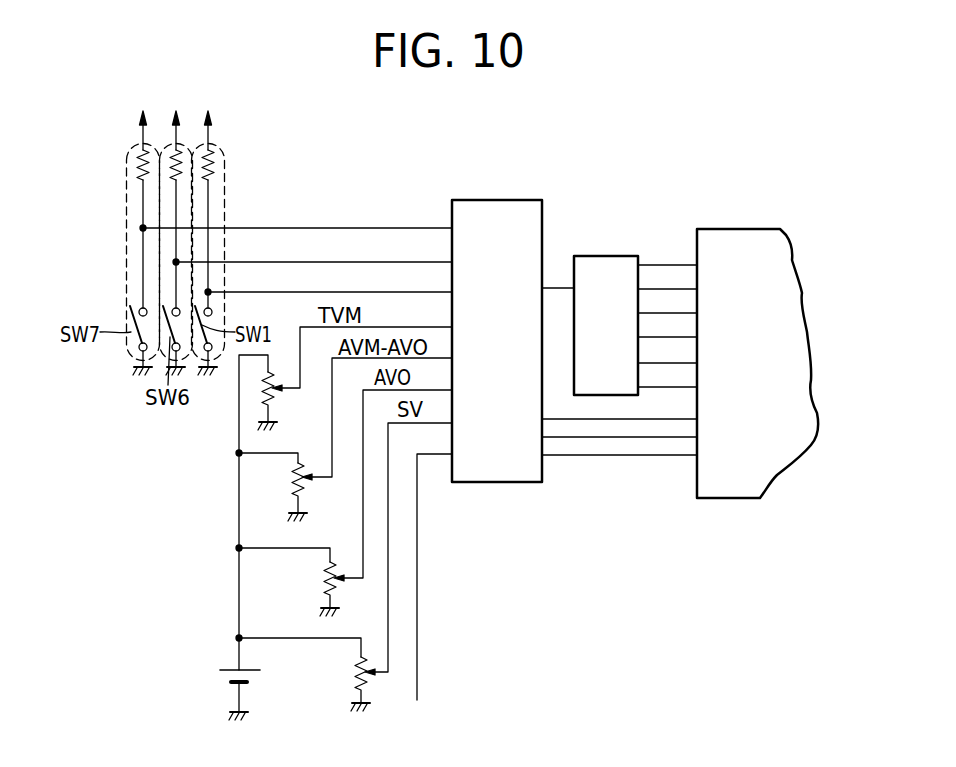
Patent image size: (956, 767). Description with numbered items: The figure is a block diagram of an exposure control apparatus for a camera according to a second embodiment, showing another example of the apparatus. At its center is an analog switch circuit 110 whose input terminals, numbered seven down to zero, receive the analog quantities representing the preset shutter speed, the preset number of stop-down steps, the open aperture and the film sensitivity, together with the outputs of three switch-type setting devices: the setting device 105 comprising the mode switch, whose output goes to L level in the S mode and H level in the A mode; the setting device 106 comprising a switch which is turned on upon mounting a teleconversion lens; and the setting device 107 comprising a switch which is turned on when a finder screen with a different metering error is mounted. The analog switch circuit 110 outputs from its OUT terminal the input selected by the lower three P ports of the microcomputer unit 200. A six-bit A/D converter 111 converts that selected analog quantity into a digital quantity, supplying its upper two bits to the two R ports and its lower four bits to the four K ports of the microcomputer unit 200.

The setting device 105 is at (208, 292).
The setting device 106 is at (176, 262).
The setting device 107 is at (143, 228).
The analog switch circuit 110 is at (490, 200).
The A/D converter 111 is at (600, 256).
The microcomputer unit 200 is at (740, 229).